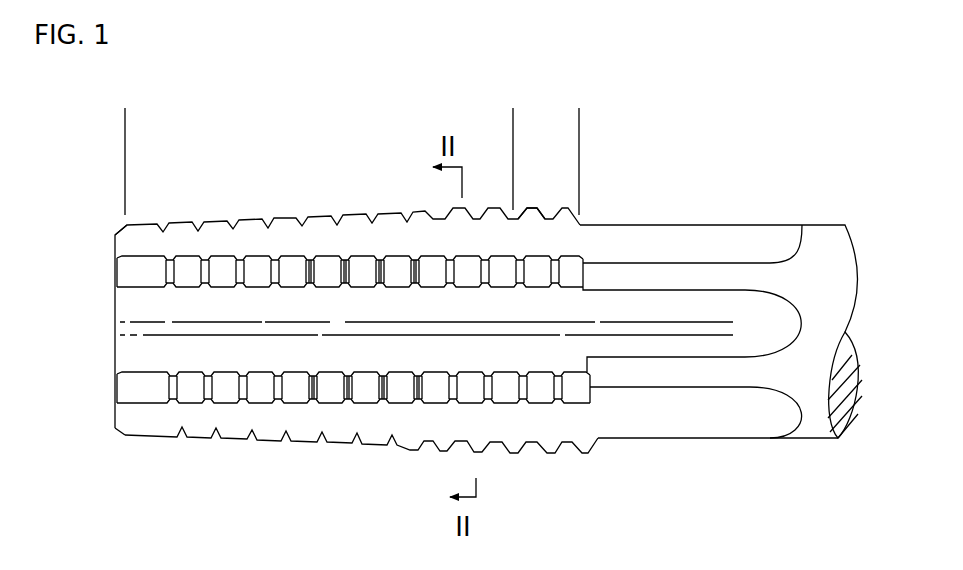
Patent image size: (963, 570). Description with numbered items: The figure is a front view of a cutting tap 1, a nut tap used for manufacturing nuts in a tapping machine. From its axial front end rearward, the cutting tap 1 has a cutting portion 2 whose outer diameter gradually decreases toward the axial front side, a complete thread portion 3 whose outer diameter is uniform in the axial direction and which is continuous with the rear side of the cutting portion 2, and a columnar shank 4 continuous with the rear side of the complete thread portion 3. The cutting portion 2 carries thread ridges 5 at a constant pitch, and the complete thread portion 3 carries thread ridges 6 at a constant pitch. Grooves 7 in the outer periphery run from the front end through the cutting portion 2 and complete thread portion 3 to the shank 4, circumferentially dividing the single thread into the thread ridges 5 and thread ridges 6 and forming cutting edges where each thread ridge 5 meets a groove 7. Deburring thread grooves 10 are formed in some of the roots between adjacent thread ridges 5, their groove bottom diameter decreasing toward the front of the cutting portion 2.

The cutting tap 1 is at (150, 437).
The cutting portion 2 is at (125, 119).
The complete thread portion 3 is at (579, 119).
The shank 4 is at (662, 225).
The thread ridges 5 is at (302, 218).
The thread ridges 6 is at (530, 208).
The grooves 7 is at (124, 240).
The deburring thread grooves 10 is at (233, 227).